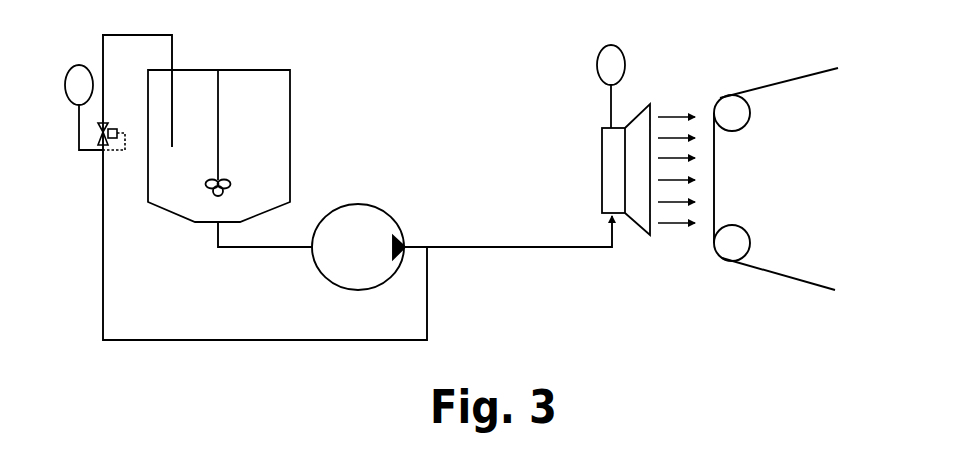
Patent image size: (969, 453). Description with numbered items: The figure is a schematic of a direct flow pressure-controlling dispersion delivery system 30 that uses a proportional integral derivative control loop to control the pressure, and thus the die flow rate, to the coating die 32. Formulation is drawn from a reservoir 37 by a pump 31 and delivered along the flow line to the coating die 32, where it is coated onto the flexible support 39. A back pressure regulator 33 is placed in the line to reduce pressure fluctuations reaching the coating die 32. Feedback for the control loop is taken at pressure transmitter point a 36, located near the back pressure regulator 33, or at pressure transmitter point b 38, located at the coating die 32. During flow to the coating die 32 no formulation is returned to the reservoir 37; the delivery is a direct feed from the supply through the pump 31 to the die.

The direct flow pressure-controlling dispersion delivery system 30 is at (85, 316).
The pump 31 is at (322, 277).
The coating die 32 is at (637, 228).
The back pressure regulator 33 is at (98, 133).
The pressure transmitter point a 36 is at (68, 75).
The tank with agitator 37 is at (277, 143).
The pressure transmitter point b 38 is at (625, 65).
The flexible support 39 is at (714, 167).